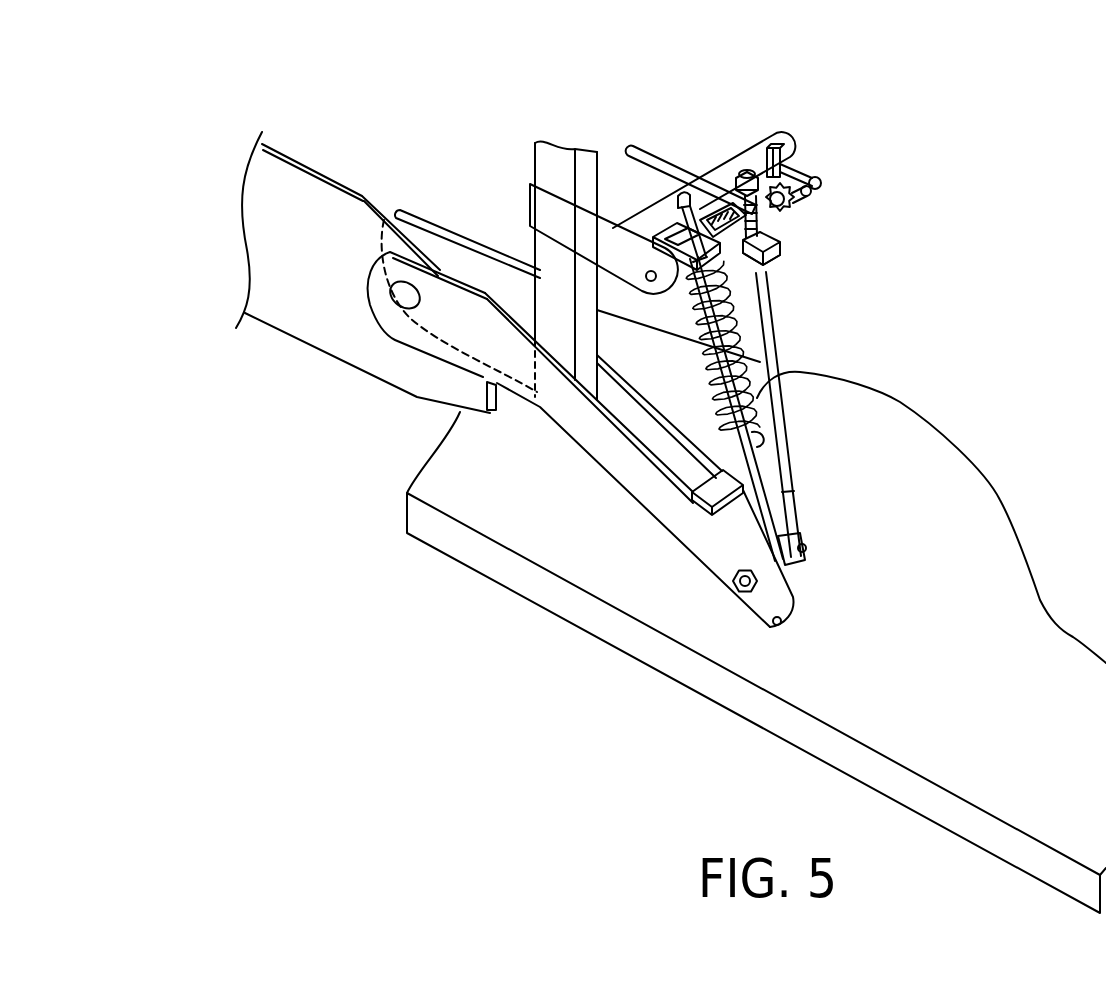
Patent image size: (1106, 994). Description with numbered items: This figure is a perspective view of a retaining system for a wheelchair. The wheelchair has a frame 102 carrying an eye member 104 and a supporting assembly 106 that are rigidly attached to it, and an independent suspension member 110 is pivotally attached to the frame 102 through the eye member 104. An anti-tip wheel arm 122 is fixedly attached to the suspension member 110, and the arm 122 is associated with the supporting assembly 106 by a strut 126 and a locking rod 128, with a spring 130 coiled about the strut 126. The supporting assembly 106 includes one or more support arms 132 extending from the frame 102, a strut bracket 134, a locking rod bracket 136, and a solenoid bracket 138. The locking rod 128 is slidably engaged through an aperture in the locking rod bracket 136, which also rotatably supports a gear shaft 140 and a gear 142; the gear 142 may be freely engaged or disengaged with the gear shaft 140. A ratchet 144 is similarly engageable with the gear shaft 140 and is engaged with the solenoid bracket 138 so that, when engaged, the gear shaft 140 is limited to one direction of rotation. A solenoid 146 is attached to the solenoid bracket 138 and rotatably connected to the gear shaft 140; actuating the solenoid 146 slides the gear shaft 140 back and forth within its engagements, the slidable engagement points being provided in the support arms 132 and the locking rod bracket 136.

The frame 102 is at (585, 163).
The eye member 104 is at (480, 218).
The supporting assembly 106 is at (736, 155).
The suspension member 110 is at (323, 355).
The anti-tip wheel arm 122 is at (620, 490).
The strut 126 is at (787, 494).
The locking rod 128 is at (788, 456).
The spring 130 is at (785, 372).
The support arm 132 is at (609, 170).
The strut bracket 134 is at (766, 326).
The locking rod bracket 136 is at (780, 253).
The solenoid bracket 138 is at (800, 172).
The gear shaft 140 is at (784, 229).
The gear 142 is at (781, 266).
The ratchet 144 is at (808, 206).
The solenoid 146 is at (820, 173).